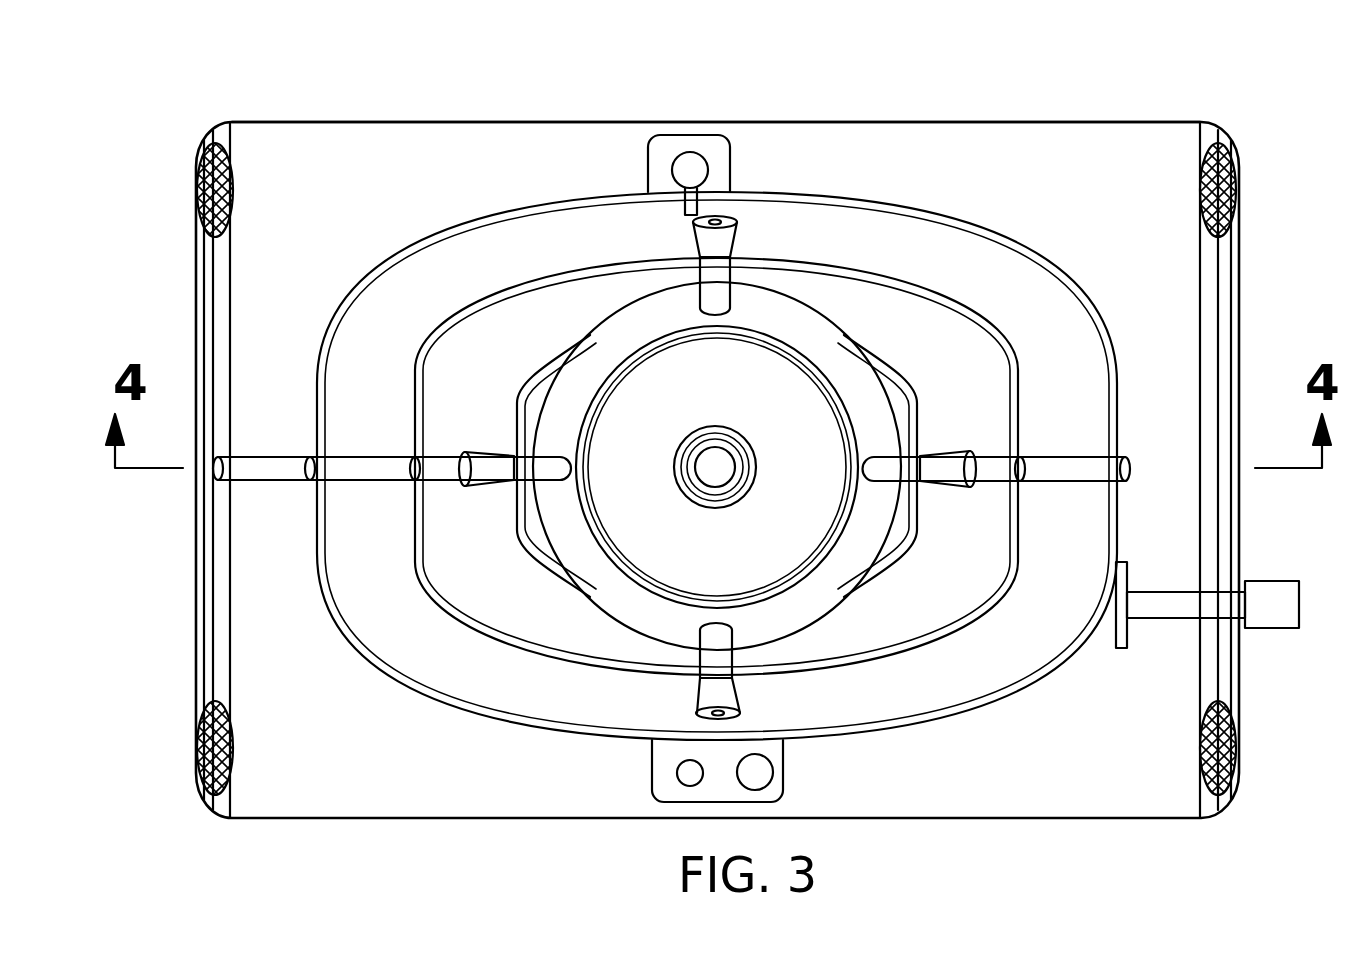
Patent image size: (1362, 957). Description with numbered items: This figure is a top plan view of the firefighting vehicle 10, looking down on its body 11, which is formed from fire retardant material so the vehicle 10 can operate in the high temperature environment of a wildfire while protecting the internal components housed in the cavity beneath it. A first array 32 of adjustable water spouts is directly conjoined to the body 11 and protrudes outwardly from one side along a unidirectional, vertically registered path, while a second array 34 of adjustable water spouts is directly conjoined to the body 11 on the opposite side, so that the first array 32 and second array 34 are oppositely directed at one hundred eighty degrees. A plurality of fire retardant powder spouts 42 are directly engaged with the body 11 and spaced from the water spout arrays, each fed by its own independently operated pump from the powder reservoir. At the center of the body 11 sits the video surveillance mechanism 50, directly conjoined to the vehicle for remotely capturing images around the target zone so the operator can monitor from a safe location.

The vehicle 10 is at (1133, 104).
The body 11 is at (925, 122).
The first array of adjustable water spouts 32 is at (415, 481).
The second array of adjustable water spouts 34 is at (1025, 476).
The spouts 42 is at (731, 220).
The video surveillance mechanism 50 is at (731, 495).